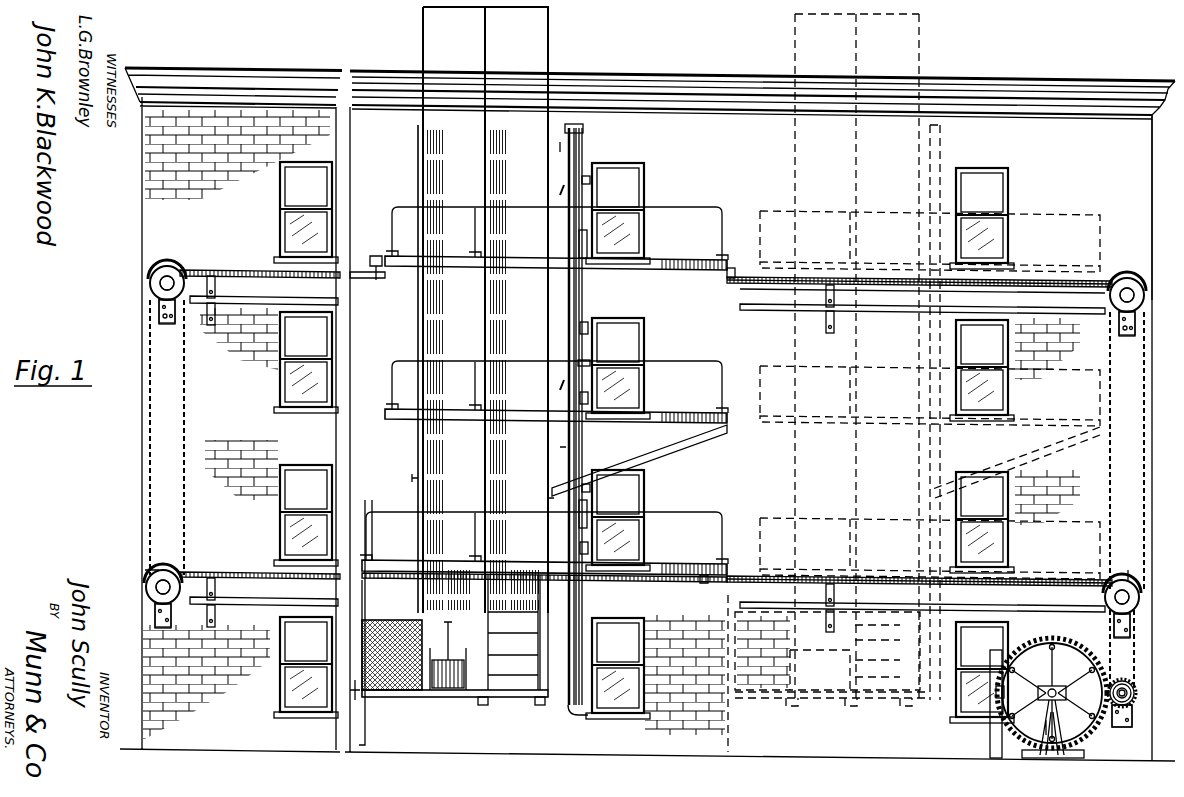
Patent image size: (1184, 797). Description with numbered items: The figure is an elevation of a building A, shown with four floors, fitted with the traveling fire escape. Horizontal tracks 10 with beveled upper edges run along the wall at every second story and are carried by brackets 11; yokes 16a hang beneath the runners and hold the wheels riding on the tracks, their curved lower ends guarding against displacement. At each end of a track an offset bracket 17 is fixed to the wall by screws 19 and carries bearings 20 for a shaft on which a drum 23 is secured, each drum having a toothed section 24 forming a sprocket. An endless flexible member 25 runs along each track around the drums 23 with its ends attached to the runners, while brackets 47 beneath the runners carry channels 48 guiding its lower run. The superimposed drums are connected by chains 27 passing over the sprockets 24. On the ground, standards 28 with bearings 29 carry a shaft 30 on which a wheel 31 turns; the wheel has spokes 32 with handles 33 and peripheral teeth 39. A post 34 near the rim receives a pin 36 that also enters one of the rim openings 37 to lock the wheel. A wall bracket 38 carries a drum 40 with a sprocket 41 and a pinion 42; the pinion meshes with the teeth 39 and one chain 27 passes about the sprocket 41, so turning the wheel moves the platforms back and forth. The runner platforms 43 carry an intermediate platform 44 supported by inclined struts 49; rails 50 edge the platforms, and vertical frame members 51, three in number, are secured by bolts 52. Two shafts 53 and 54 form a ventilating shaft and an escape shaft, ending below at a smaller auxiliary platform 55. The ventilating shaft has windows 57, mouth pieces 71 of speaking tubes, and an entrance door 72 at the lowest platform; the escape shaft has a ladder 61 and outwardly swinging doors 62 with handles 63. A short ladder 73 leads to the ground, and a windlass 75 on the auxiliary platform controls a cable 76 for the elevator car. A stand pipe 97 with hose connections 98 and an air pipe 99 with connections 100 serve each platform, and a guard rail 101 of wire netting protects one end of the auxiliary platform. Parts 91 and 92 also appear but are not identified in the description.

The horizontal track 10 is at (250, 273).
The bracket 11 is at (222, 272).
The yoke 16a is at (712, 584).
The offset bracket 17 is at (159, 305).
The screws or bolts 19 is at (168, 324).
The bearing 20 is at (175, 282).
The drum 23 is at (167, 266).
The sprocket section 24 is at (150, 575).
The endless flexible member 25 is at (735, 268).
The chain 27 is at (148, 456).
The standard 28 is at (1068, 730).
The bearing 29 is at (1058, 682).
The shaft 30 is at (1065, 706).
The wheel 31 is at (1040, 646).
The spoke 32 is at (1038, 672).
The handle 33 is at (1081, 687).
The post 34 is at (990, 736).
The pin or bolt 36 is at (996, 692).
The rim opening 37 is at (1092, 668).
The bracket 38 is at (1132, 710).
The peripheral teeth 39 is at (1085, 755).
The drum 40 is at (1136, 690).
The sprocket 41 is at (1120, 682).
The pinion 42 is at (1128, 687).
The platform 43 is at (690, 262).
The intermediate platform 44 is at (660, 410).
The bracket 47 is at (768, 311).
The longitudinal channel 48 is at (212, 325).
The inclined strut 49 is at (650, 455).
The rail 50 is at (680, 362).
The vertical frame member 51 is at (548, 335).
The bolt 52 is at (514, 711).
The ventilating shaft 53 is at (445, 163).
The escape shaft 54 is at (530, 65).
The auxiliary platform 55 is at (455, 697).
The sight opening or window 57 is at (418, 142).
The ladder 61 is at (510, 690).
The door 62 is at (573, 335).
The handle 63 is at (560, 281).
The mouth piece 71 is at (588, 447).
The door 72 is at (412, 478).
The short ladder 73 is at (355, 690).
The windlass 75 is at (440, 688).
The line or cable 76 is at (448, 637).
The slide block 91 is at (587, 247).
The block 92 is at (590, 363).
The stand pipe 97 is at (578, 150).
The hose connection 98 is at (588, 398).
The air pipe 99 is at (588, 330).
The air connection 100 is at (590, 180).
The guard rail 101 is at (392, 673).
The building A is at (1122, 192).